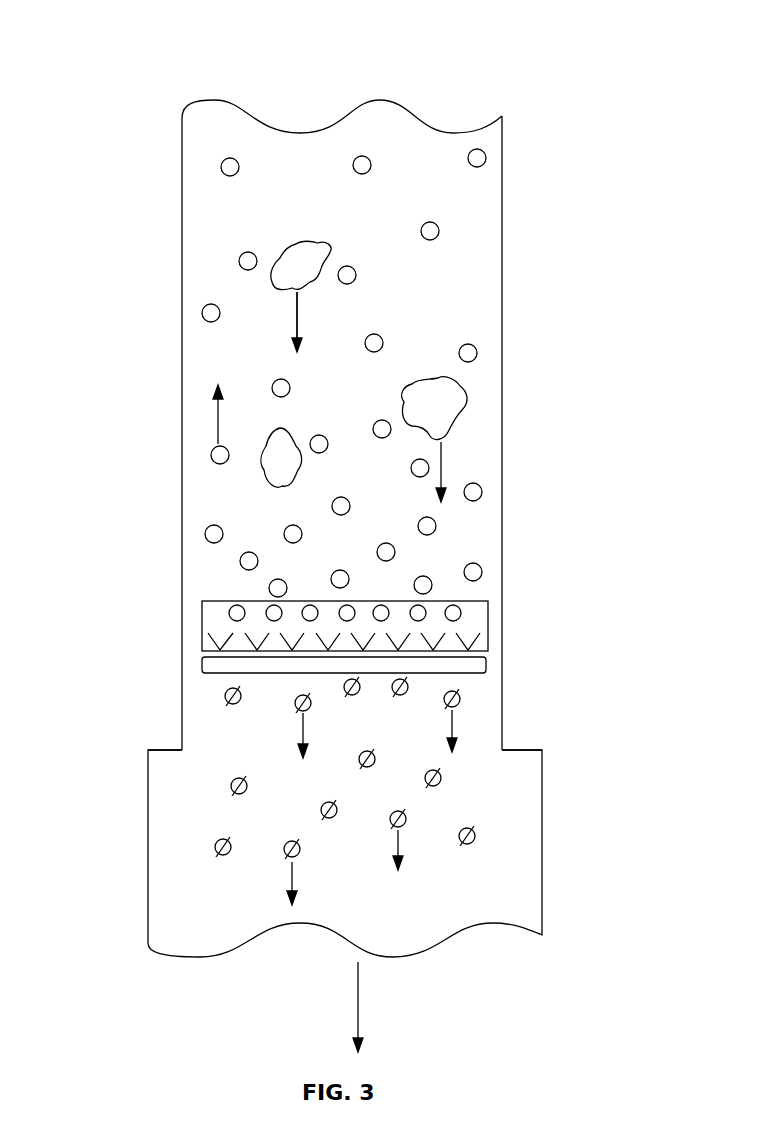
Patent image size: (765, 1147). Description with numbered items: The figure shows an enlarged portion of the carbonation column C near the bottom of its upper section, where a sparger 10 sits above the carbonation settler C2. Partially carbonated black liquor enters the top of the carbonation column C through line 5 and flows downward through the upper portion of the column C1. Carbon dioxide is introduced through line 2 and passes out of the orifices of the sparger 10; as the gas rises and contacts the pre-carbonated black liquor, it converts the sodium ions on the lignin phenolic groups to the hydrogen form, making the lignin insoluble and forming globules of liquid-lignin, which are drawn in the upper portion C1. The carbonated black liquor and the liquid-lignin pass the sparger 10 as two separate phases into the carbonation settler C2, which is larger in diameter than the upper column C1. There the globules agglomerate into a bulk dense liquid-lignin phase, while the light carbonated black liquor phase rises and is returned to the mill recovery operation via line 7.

The line 5 is at (338, 86).
The carbonation column C is at (528, 306).
The upper portion of the carbonation column C1 is at (312, 319).
The carbonation settler C2 is at (358, 981).
The sparger 10 is at (500, 627).
The line 2 is at (488, 664).
The line 7 is at (170, 750).